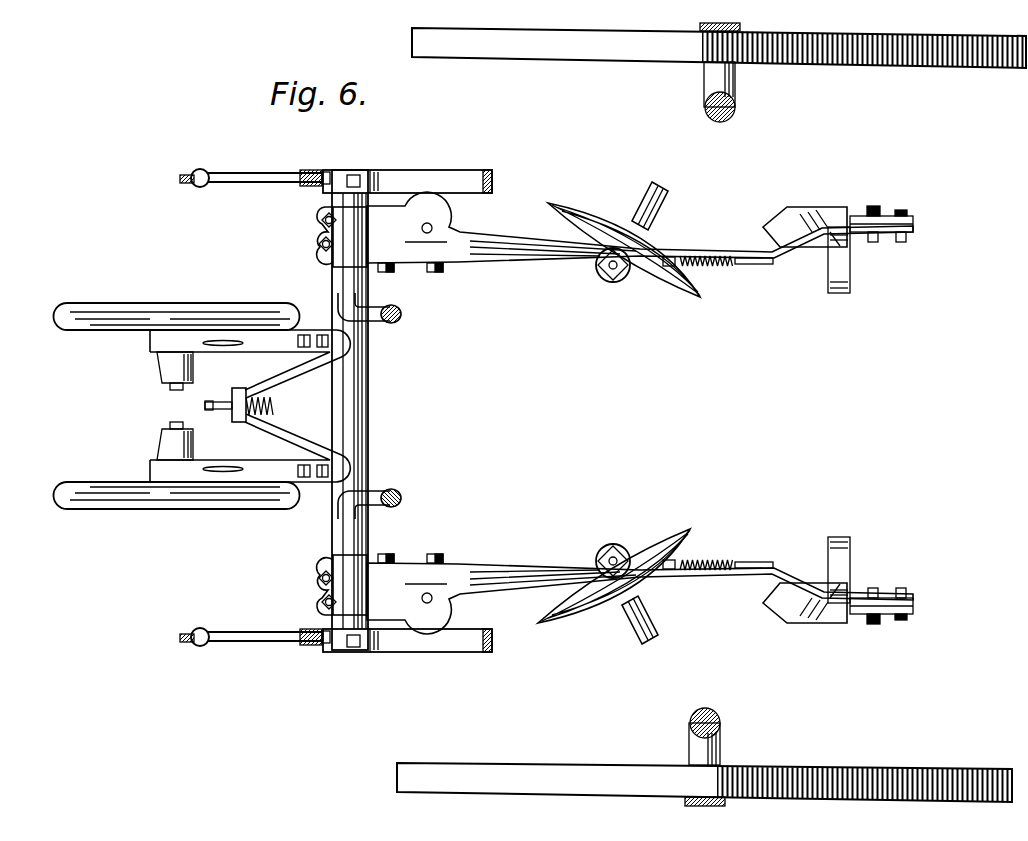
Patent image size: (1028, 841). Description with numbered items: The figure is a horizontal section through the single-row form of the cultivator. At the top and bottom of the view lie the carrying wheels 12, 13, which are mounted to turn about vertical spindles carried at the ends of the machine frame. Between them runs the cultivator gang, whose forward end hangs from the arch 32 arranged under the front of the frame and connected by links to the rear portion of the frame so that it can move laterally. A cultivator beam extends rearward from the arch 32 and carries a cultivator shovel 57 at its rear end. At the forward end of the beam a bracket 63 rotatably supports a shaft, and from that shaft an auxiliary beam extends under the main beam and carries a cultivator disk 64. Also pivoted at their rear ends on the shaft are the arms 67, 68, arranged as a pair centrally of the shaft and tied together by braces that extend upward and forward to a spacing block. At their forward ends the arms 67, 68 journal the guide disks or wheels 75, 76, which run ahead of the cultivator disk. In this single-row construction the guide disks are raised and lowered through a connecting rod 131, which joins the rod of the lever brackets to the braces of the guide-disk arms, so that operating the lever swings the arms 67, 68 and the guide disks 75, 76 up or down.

The carrying wheel 12 is at (502, 768).
The carrying wheel 13 is at (502, 52).
The arch 32 is at (415, 306).
The cultivator shovel 57 is at (808, 224).
The bracket 63 is at (343, 238).
The cultivator disk 64 is at (681, 287).
The arm 67 is at (276, 482).
The arm 68 is at (273, 332).
The guide disk 75 is at (192, 508).
The guide disk 76 is at (204, 292).
The connecting rod 131 is at (266, 406).